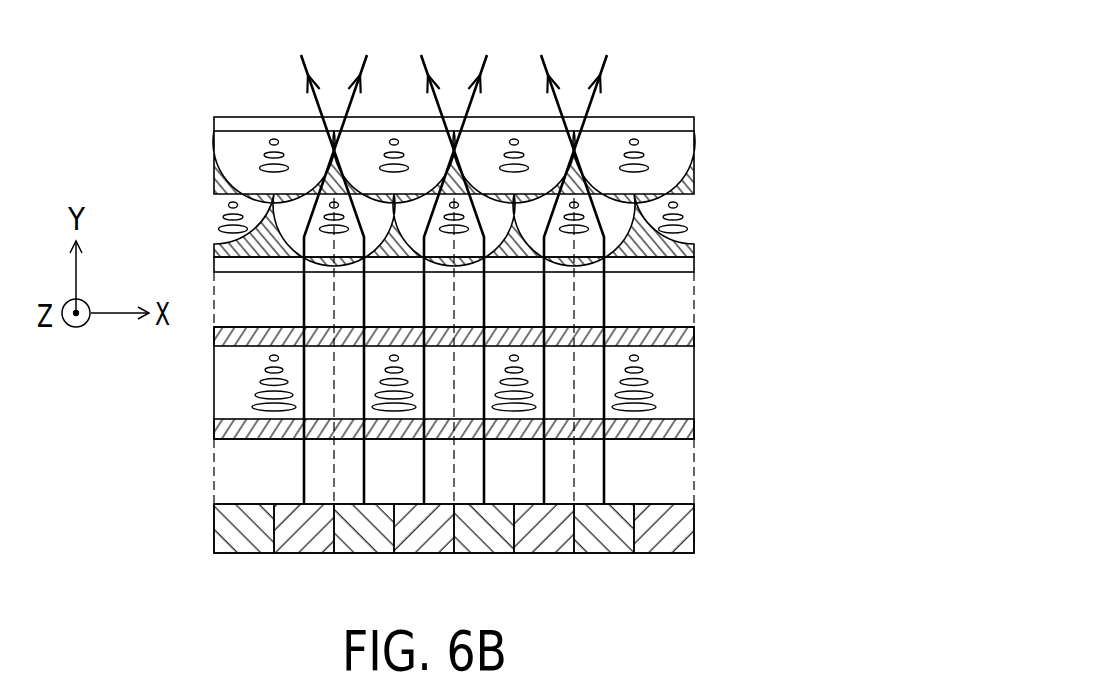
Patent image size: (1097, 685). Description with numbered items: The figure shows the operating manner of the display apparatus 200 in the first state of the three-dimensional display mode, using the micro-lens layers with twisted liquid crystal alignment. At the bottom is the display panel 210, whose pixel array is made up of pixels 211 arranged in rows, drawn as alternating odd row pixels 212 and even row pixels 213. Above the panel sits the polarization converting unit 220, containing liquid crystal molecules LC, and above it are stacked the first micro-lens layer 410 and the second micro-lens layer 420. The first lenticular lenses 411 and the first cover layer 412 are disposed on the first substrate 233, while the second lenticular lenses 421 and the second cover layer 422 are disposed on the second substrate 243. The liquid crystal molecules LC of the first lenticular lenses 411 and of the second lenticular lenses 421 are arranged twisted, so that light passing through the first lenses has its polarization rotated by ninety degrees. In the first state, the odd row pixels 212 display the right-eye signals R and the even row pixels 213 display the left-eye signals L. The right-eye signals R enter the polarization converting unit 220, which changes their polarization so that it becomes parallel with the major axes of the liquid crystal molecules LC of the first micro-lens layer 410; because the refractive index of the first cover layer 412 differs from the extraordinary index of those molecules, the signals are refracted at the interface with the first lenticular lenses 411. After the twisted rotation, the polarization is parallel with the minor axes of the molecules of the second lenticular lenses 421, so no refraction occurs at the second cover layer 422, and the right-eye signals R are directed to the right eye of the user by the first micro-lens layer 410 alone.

The display apparatus 200 is at (478, 331).
The display panel 210 is at (448, 558).
The pixels 211 is at (407, 558).
The odd row pixels 212 is at (363, 545).
The even row pixels 213 is at (292, 545).
The polarization converting unit 220 is at (694, 379).
The first substrate 233 is at (695, 270).
The second substrate 243 is at (694, 124).
The first micro-lens layer 410 is at (525, 233).
The first lenticular lenses 411 is at (693, 218).
The first cover layer 412 is at (685, 248).
The second micro-lens layer 420 is at (525, 144).
The second lenticular lenses 421 is at (693, 142).
The second cover layer 422 is at (680, 175).
The liquid crystal molecules LC is at (265, 143).
The left-eye signals L is at (349, 107).
The right-eye signals R is at (305, 73).